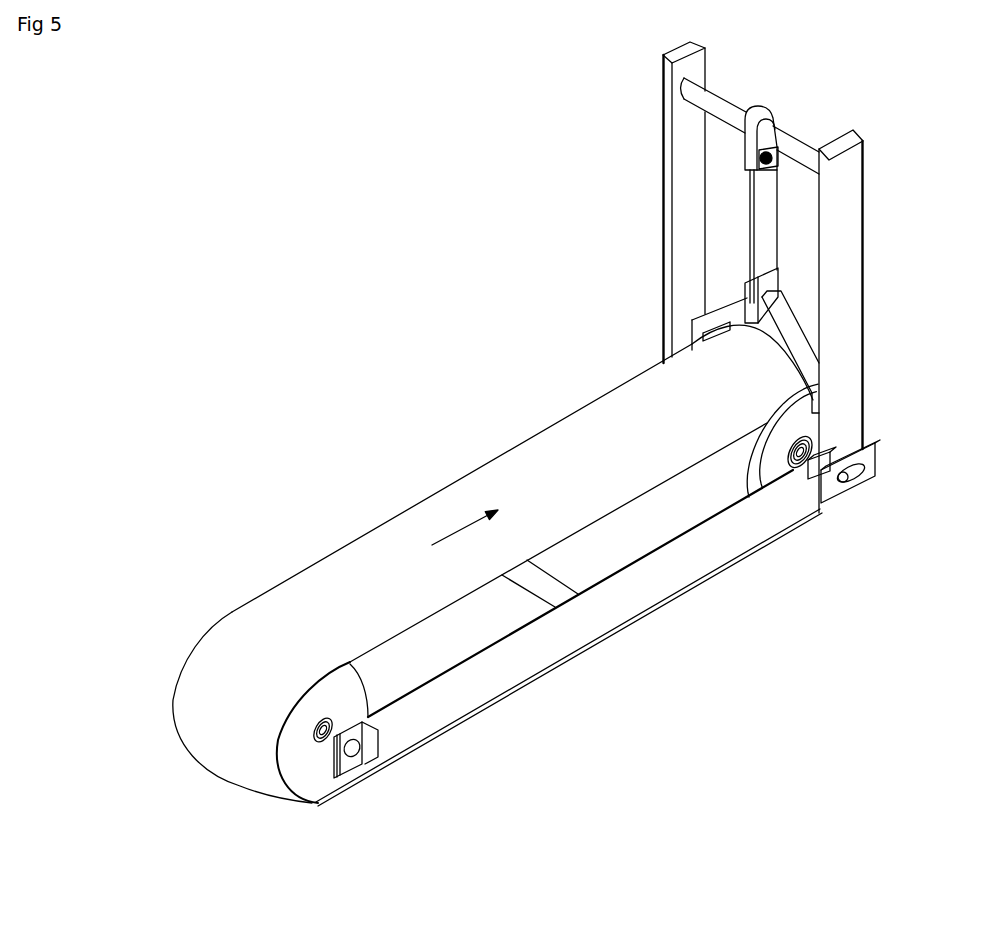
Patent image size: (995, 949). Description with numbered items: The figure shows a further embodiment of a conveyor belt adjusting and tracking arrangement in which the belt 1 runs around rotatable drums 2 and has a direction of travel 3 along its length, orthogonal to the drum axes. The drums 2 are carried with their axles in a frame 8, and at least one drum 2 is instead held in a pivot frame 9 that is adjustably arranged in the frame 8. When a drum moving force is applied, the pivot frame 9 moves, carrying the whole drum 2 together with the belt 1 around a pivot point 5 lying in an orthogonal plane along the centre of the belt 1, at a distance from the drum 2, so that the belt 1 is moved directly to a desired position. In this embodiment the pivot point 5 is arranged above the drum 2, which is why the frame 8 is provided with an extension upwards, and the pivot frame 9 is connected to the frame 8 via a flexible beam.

The belt 1 is at (585, 442).
The drum 2 is at (778, 468).
The direction of travel 3 is at (455, 527).
The pivot point 5 is at (751, 160).
The frame 8 is at (685, 577).
The pivot frame 9 is at (700, 320).